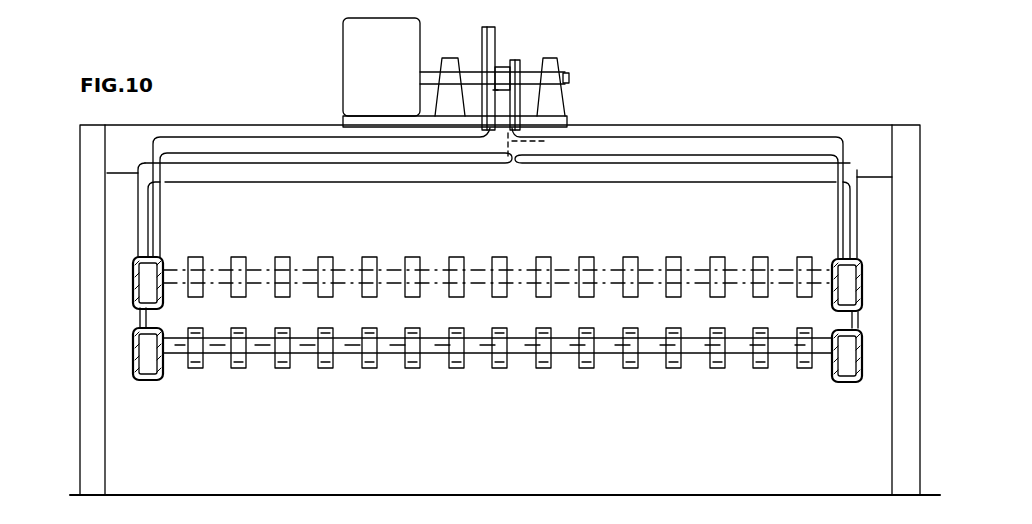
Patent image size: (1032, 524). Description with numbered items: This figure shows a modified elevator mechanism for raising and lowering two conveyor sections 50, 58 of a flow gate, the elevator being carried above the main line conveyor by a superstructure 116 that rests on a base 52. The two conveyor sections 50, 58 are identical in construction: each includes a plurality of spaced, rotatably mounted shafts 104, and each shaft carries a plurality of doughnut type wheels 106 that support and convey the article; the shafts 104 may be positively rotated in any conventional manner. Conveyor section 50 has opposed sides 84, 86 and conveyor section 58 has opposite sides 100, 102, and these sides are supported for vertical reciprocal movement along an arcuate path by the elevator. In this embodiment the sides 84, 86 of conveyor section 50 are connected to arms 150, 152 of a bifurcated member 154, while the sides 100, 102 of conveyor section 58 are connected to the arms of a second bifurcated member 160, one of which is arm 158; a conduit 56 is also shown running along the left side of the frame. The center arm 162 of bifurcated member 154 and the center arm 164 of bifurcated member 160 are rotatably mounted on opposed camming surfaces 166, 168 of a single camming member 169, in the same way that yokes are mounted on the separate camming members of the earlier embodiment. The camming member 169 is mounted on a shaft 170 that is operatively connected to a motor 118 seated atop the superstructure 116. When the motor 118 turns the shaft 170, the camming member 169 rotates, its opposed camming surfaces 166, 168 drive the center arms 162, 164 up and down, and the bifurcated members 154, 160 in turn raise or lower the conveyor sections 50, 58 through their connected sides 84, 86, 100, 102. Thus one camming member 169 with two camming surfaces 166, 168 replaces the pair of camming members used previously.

The conveyor section 50 is at (660, 240).
The base 52 is at (592, 495).
The conduit 56 is at (138, 220).
The conveyor section 58 is at (712, 390).
The side 84 is at (133, 283).
The side 86 is at (857, 284).
The side 100 is at (133, 365).
The side 102 is at (860, 372).
The shafts 104 is at (390, 268).
The doughnut type wheels 106 is at (368, 257).
The superstructure 116 is at (912, 268).
The motor 118 is at (343, 42).
The arm 150 is at (160, 232).
The arm 152 is at (838, 202).
The bifurcated member 154 is at (790, 126).
The arm 158 is at (878, 228).
The bifurcated member 160 is at (518, 190).
The center arm 162 is at (483, 105).
The center arm 164 is at (547, 145).
The camming surface 166 is at (482, 45).
The camming surface 168 is at (523, 65).
The camming member 169 is at (497, 42).
The shaft 170 is at (569, 78).